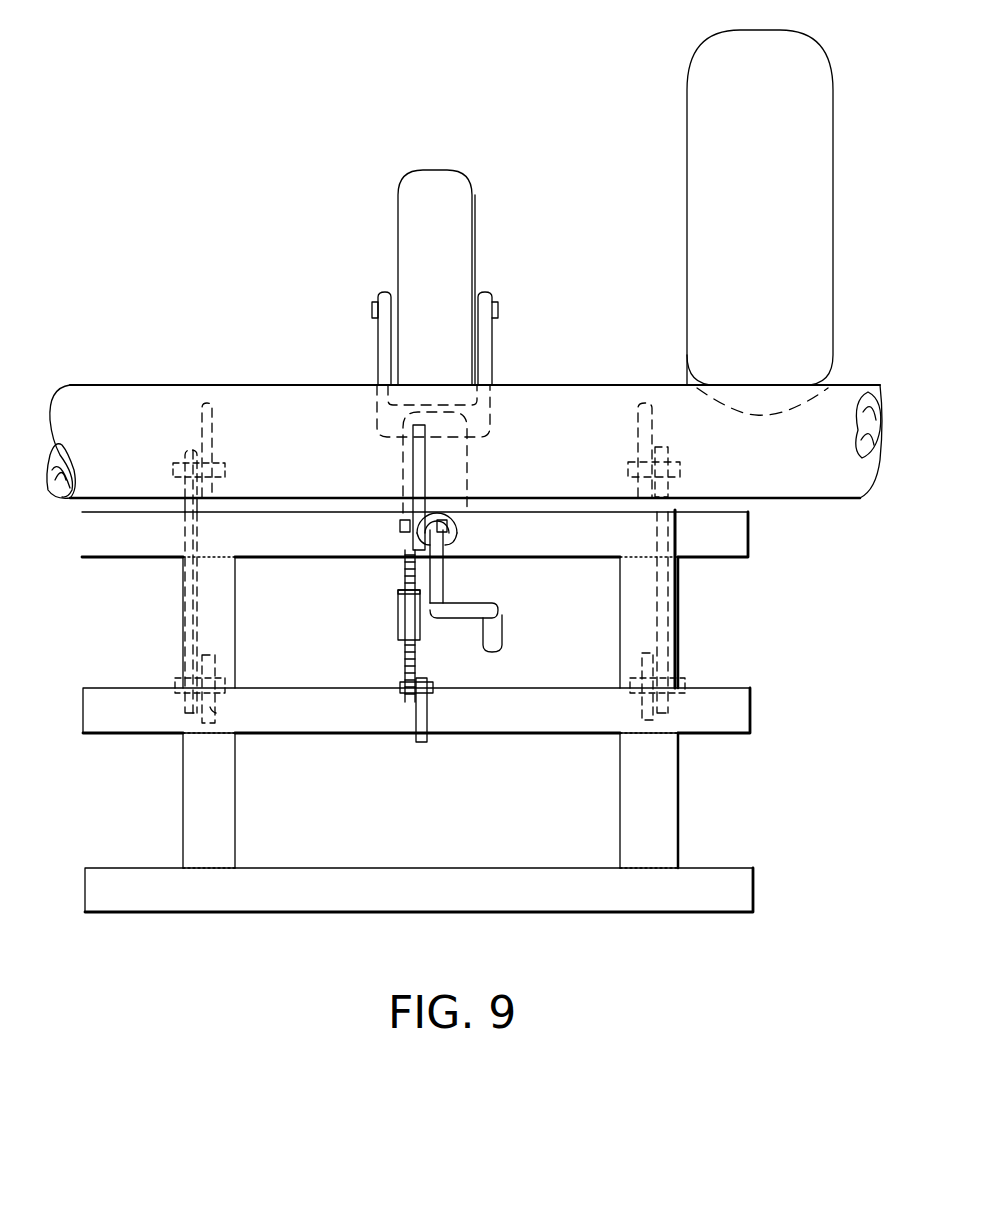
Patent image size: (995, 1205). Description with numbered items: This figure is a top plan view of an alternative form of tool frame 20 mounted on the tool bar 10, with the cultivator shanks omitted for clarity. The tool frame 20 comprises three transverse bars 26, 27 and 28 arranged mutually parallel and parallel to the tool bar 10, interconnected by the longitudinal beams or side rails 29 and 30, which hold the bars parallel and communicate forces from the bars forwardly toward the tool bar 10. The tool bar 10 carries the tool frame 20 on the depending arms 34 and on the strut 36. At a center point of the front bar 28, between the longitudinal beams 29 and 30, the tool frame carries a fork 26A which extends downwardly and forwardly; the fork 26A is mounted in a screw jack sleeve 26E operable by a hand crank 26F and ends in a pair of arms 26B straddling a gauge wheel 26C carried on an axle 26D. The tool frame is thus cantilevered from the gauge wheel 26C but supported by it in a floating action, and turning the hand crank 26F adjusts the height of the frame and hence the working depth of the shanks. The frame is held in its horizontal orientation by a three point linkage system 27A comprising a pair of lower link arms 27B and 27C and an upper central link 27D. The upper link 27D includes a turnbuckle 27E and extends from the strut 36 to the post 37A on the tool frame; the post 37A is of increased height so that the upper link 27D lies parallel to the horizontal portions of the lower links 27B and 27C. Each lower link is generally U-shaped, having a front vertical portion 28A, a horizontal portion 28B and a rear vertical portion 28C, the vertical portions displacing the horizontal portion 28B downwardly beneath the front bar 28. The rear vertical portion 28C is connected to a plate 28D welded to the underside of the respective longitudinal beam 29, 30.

The tool bar 10 is at (124, 383).
The tool frame 20 is at (470, 712).
The transverse bar 26 is at (403, 873).
The fork 26A is at (480, 438).
The arms 26B is at (378, 333).
The gauge wheel 26C is at (410, 215).
The axle 26D is at (374, 305).
The screw jack sleeve 26E is at (460, 520).
The hand crank 26F is at (445, 590).
The transverse bar 27 is at (553, 715).
The three point linkage system 27A is at (399, 643).
The lower link arm 27B is at (200, 605).
The lower link arm 27C is at (676, 610).
The upper central link 27D is at (398, 592).
The turnbuckle 27E is at (400, 610).
The front bar 28 is at (726, 543).
The vertical portion 28A is at (190, 450).
The horizontal portion 28B is at (186, 590).
The vertical portion 28C is at (197, 661).
The plate 28D is at (222, 710).
The side rail 29 is at (236, 638).
The side rail 30 is at (625, 598).
The depending arm 34 is at (210, 434).
The strut 36 is at (413, 455).
The post 37A is at (427, 720).